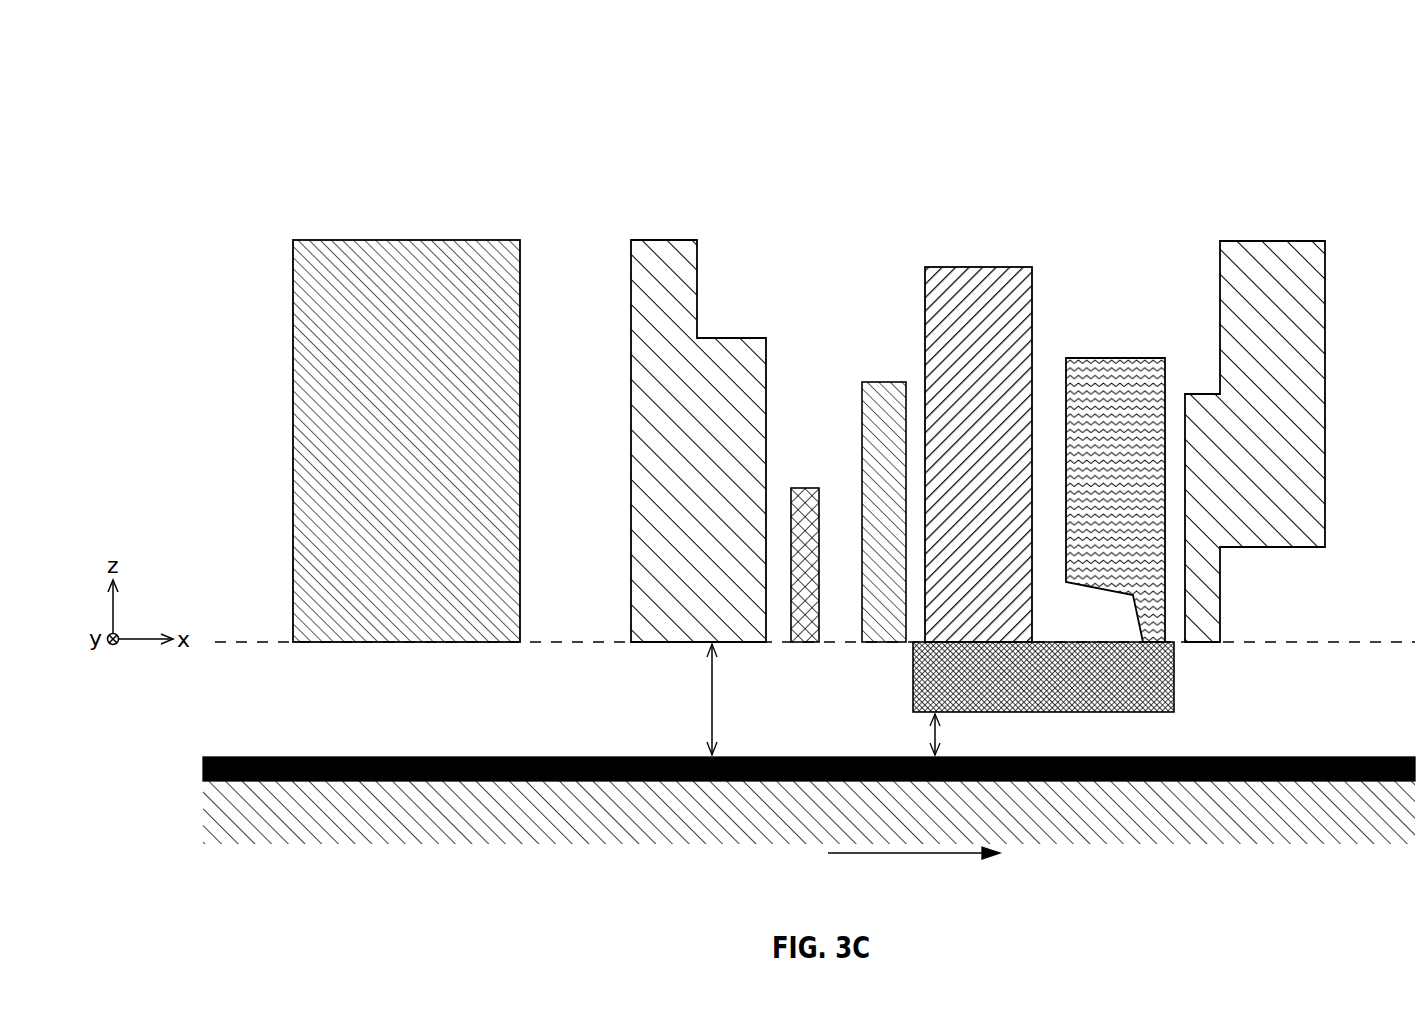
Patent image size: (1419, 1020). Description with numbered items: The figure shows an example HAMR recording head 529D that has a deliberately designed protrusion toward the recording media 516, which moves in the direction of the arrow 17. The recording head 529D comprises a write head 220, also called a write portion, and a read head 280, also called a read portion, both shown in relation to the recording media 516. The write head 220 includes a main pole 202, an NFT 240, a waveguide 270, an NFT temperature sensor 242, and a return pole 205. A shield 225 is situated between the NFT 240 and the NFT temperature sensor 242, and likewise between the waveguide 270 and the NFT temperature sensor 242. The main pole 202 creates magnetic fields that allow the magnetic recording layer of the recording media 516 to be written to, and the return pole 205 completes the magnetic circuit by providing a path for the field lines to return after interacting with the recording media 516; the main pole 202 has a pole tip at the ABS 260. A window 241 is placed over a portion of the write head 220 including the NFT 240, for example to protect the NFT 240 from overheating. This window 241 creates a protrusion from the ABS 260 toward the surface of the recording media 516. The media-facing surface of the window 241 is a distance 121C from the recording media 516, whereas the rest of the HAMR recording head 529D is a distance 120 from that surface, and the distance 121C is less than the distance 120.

The HAMR recording head 529D is at (338, 340).
The write head 220 is at (998, 398).
The return pole 205 is at (658, 240).
The NFT temperature sensor 242 is at (808, 488).
The shield 225 is at (880, 382).
The waveguide 270 is at (972, 267).
The NFT 240 is at (1130, 358).
The main pole 202 is at (1272, 241).
The read head 280 is at (435, 455).
The ABS 260 is at (1243, 643).
The window 241 is at (1155, 712).
The distance 120 is at (711, 693).
The distance 121C is at (933, 733).
The arrow 17 is at (915, 855).
The recording media 516 is at (1140, 853).